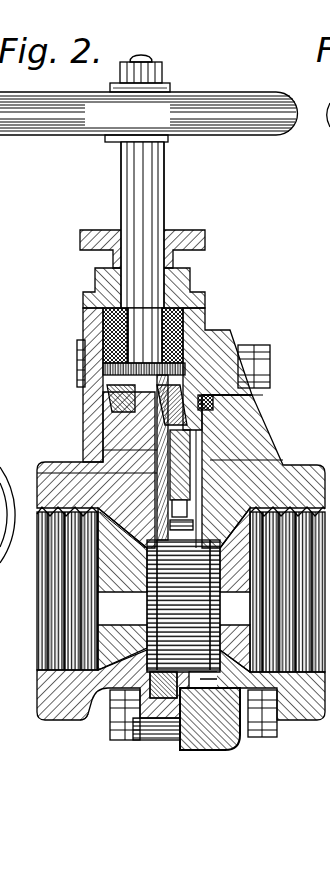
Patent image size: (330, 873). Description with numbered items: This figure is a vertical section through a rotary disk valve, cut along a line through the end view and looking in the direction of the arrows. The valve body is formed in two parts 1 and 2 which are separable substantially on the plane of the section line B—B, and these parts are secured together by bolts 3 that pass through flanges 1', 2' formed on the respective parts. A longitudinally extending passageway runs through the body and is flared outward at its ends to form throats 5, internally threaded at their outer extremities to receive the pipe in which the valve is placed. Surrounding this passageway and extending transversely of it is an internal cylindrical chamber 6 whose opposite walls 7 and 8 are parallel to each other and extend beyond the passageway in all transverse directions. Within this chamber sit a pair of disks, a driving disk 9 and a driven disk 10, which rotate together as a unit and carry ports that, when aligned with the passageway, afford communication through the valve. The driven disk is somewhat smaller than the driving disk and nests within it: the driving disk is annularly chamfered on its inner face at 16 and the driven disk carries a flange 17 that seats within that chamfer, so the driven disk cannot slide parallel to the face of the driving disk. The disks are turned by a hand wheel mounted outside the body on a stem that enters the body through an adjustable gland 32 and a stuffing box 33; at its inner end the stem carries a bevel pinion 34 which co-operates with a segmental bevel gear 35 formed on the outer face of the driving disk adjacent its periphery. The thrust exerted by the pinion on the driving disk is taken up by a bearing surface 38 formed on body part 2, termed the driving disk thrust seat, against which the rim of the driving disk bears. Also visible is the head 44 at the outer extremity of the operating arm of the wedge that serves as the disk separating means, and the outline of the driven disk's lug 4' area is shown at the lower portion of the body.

The body part 1 is at (181, 556).
The flange 1' is at (208, 731).
The body part 2 is at (191, 385).
The flange 2' is at (256, 733).
The bolts 3 is at (270, 376).
The body lug 4' is at (83, 735).
The throats 5 is at (174, 590).
The internal cylindrical chamber 6 is at (103, 450).
The chamber wall 7 is at (37, 473).
The chamber wall 8 is at (270, 462).
The driving disk 9 is at (126, 548).
The driven disk 10 is at (200, 548).
The chamfer 16 is at (160, 742).
The flange 17 is at (190, 672).
The adjustable gland 32 is at (80, 243).
The stuffing box 33 is at (83, 300).
The bevel pinion 34 is at (110, 400).
The segmental bevel gear 35 is at (215, 388).
The bearing surface 38 is at (218, 395).
The head 44 is at (215, 400).
The section line B— B is at (197, 271).